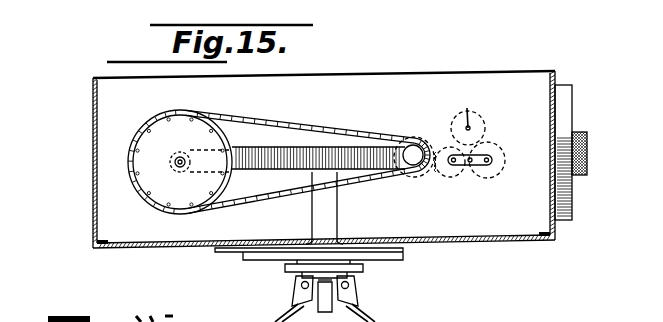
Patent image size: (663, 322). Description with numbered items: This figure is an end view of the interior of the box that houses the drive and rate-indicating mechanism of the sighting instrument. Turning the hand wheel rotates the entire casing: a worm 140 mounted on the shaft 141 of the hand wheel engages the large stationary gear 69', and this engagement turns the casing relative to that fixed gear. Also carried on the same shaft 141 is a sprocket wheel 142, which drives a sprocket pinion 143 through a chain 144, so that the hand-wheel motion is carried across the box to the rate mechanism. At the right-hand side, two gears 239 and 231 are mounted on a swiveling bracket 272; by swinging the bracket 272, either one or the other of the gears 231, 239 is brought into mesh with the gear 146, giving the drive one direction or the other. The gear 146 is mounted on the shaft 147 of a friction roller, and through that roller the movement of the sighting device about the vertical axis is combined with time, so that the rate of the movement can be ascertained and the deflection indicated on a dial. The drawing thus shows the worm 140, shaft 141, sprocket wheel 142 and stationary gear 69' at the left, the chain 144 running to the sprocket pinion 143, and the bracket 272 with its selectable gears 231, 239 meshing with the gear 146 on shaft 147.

The worm 140 is at (177, 155).
The shaft 141 is at (178, 163).
The sprocket wheel 142 is at (180, 162).
The large stationary gear 69' is at (318, 171).
The chain 144 is at (302, 122).
The sprocket pinion 143 is at (413, 164).
The gear 239 is at (447, 142).
The gear 146 is at (482, 116).
The shaft 147 is at (471, 107).
The gear 231 is at (492, 143).
The swiveling bracket 272 is at (470, 166).